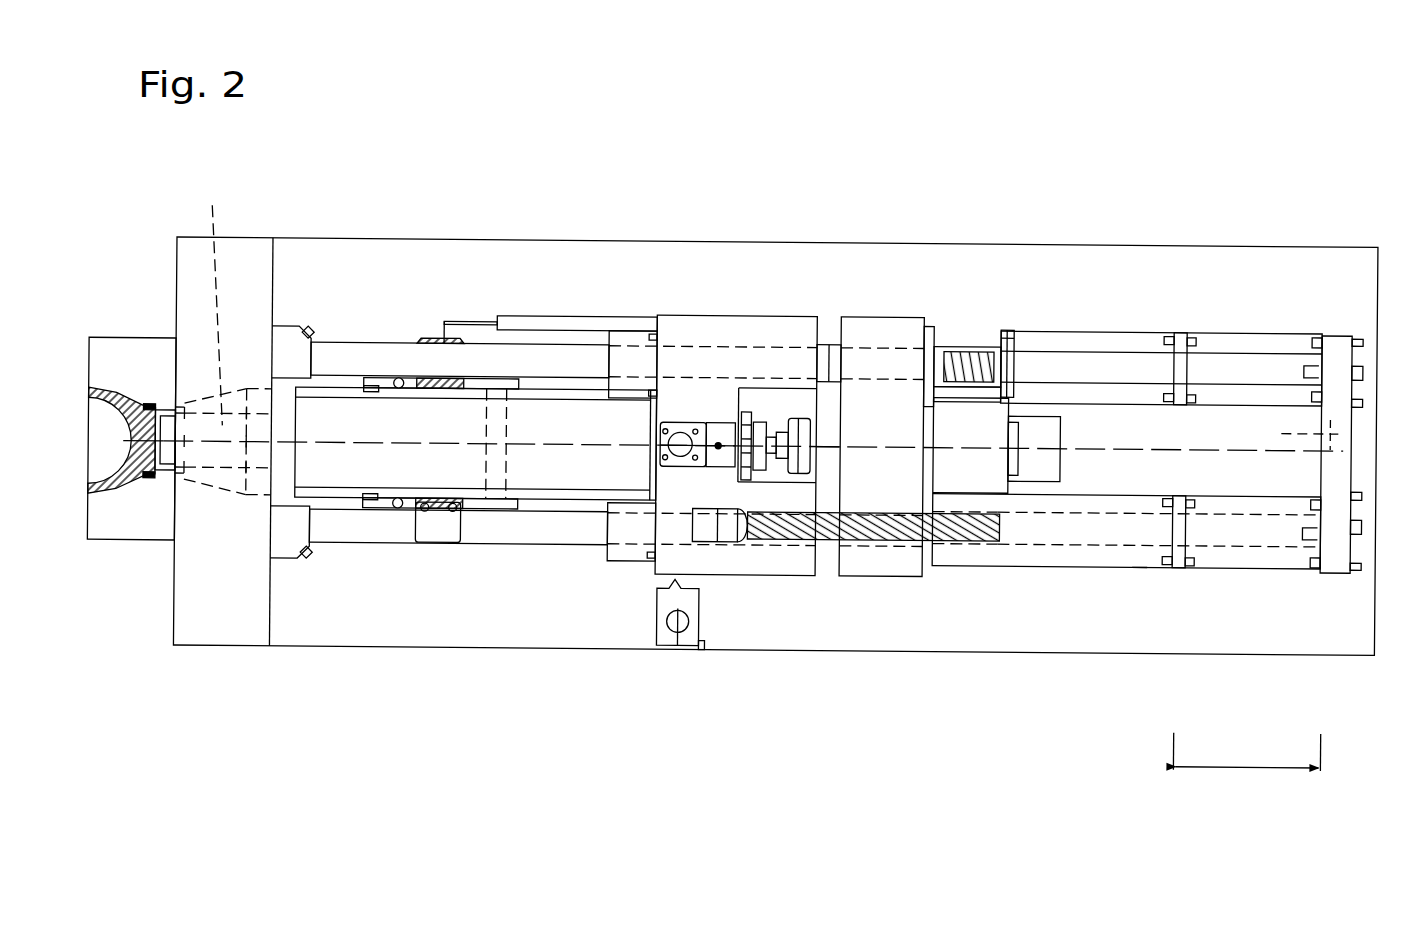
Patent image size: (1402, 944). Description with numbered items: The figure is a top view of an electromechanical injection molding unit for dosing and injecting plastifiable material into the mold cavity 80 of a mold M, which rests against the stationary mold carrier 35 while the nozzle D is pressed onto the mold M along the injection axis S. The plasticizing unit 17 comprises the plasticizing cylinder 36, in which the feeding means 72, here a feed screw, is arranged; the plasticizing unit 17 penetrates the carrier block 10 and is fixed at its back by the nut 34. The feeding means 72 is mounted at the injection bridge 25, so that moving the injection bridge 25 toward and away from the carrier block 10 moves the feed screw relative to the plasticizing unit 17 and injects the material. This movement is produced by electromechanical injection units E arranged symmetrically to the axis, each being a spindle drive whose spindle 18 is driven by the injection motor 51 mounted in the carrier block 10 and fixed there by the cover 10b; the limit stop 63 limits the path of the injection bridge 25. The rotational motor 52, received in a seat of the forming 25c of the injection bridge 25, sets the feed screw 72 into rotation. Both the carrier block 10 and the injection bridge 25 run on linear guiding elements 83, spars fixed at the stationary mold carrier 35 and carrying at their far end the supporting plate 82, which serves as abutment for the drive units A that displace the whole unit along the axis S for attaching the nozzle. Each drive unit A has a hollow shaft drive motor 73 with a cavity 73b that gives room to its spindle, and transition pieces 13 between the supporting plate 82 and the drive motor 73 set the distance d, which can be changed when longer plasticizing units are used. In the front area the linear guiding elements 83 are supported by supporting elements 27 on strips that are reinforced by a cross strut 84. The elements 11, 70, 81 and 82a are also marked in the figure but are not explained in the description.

The carrier block 10 is at (737, 355).
The cover 10b is at (802, 315).
The motor flange 11 is at (950, 281).
The transition pieces 13 is at (1127, 376).
The plasticizing unit 17 is at (358, 432).
The spindle 18 is at (978, 326).
The injection bridge 25 is at (871, 361).
The forming 25c is at (951, 427).
The supporting elements 27 is at (416, 461).
The nut 34 is at (845, 612).
The stationary mold carrier 35 is at (233, 490).
The plasticizing cylinder 36 is at (300, 375).
The injection motor 51 is at (619, 428).
The rotational motor 52 is at (1025, 569).
The limit stop 63 is at (997, 271).
The linear guide 70 is at (551, 260).
The feeding means 72 is at (771, 372).
The drive motor 73 is at (1137, 459).
The cavity 73b is at (1185, 629).
The mold cavity 80 is at (136, 473).
The machine base 81 is at (1302, 623).
The supporting plate 82 is at (1338, 372).
The end plate axis 82a is at (1290, 433).
The linear guiding elements 83 is at (1161, 340).
The cross strut 84 is at (497, 551).
The mold M is at (124, 258).
The nozzle D is at (229, 339).
The injection units E is at (876, 437).
The drive units A is at (1127, 447).
The injection axis S is at (733, 433).
The distance d is at (1246, 752).